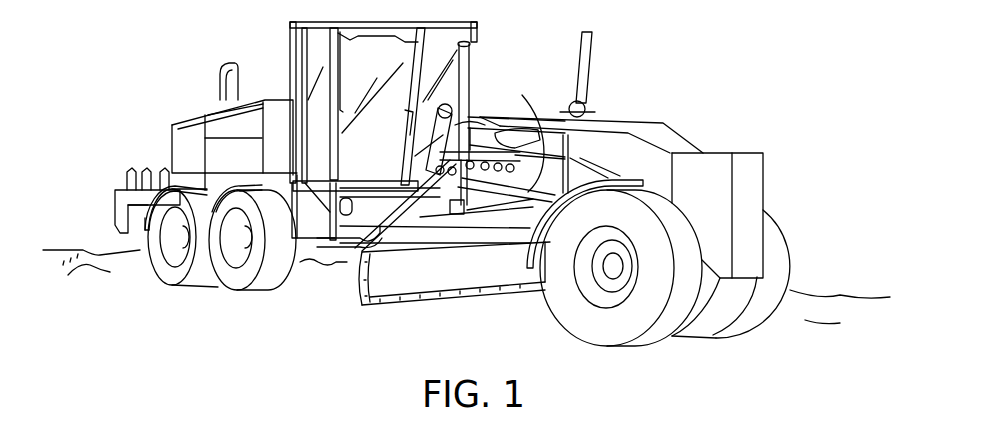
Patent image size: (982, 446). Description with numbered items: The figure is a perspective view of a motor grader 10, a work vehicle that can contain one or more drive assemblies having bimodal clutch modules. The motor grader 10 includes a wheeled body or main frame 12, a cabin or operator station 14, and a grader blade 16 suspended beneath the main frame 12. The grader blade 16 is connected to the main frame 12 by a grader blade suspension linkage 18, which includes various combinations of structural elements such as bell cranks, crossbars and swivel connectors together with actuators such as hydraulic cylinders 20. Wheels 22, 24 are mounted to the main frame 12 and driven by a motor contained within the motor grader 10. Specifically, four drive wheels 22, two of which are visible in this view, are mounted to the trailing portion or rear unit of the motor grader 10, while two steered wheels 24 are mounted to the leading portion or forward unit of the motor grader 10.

The motor grader 10 is at (641, 77).
The main frame 12 is at (685, 137).
The operator station 14 is at (296, 42).
The grader blade 16 is at (373, 307).
The grader blade suspension linkage 18 is at (427, 167).
The hydraulic cylinders 20 is at (578, 78).
The drive wheels 22 is at (233, 280).
The steered wheels 24 is at (563, 323).